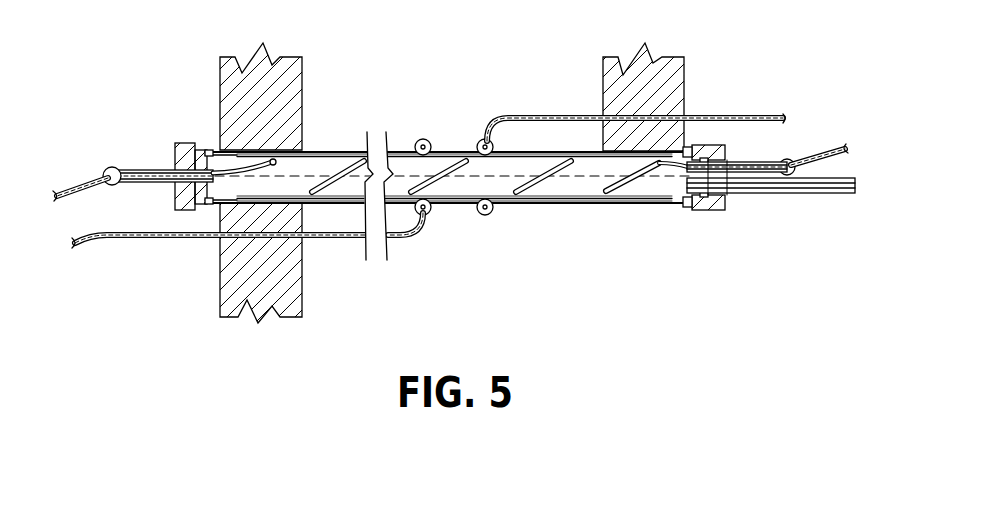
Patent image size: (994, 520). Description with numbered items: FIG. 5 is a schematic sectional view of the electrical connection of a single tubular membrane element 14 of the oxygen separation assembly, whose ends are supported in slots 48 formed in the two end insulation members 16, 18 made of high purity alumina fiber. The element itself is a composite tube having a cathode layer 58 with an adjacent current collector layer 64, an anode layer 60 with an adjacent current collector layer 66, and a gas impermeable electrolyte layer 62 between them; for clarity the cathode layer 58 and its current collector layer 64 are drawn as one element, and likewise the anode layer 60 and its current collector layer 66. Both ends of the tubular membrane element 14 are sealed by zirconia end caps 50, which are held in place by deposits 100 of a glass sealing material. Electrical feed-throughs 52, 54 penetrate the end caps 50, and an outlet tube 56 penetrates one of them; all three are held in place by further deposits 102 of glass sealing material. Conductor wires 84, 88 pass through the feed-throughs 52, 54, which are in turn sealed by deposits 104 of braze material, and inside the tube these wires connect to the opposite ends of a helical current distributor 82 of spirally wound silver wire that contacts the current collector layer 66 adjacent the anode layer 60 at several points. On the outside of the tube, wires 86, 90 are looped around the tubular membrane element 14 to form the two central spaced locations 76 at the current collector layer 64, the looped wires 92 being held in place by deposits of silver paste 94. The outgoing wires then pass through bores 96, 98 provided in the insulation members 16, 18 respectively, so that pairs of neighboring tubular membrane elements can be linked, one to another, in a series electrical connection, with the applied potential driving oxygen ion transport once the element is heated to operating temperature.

The tubular membrane element 14 is at (513, 238).
The end insulation member 16 is at (307, 59).
The end insulation member 18 is at (690, 60).
The slot 48 is at (290, 150).
The end cap 50 is at (172, 203).
The electrical feed-through 52 is at (137, 170).
The electrical feed-through 54 is at (760, 161).
The outlet tube 56 is at (785, 194).
The cathode layer 58 is at (454, 147).
The anode layer 60 is at (454, 223).
The electrolyte layer 62 is at (533, 201).
The current collector layer 64 is at (340, 152).
The current collector layer 66 is at (563, 199).
The central spaced locations 76 is at (434, 139).
The current distributor 82 is at (615, 192).
The insulated wire 84 is at (96, 183).
The insulated wire 86 is at (190, 238).
The insulated wire 88 is at (828, 148).
The insulated wire 90 is at (540, 116).
The looped wires 92 is at (419, 141).
The silver paste deposit 94 is at (438, 212).
The bore 96 is at (285, 238).
The bore 98 is at (604, 118).
The deposit 100 is at (207, 211).
The deposit 102 is at (170, 168).
The braze deposit 104 is at (108, 168).